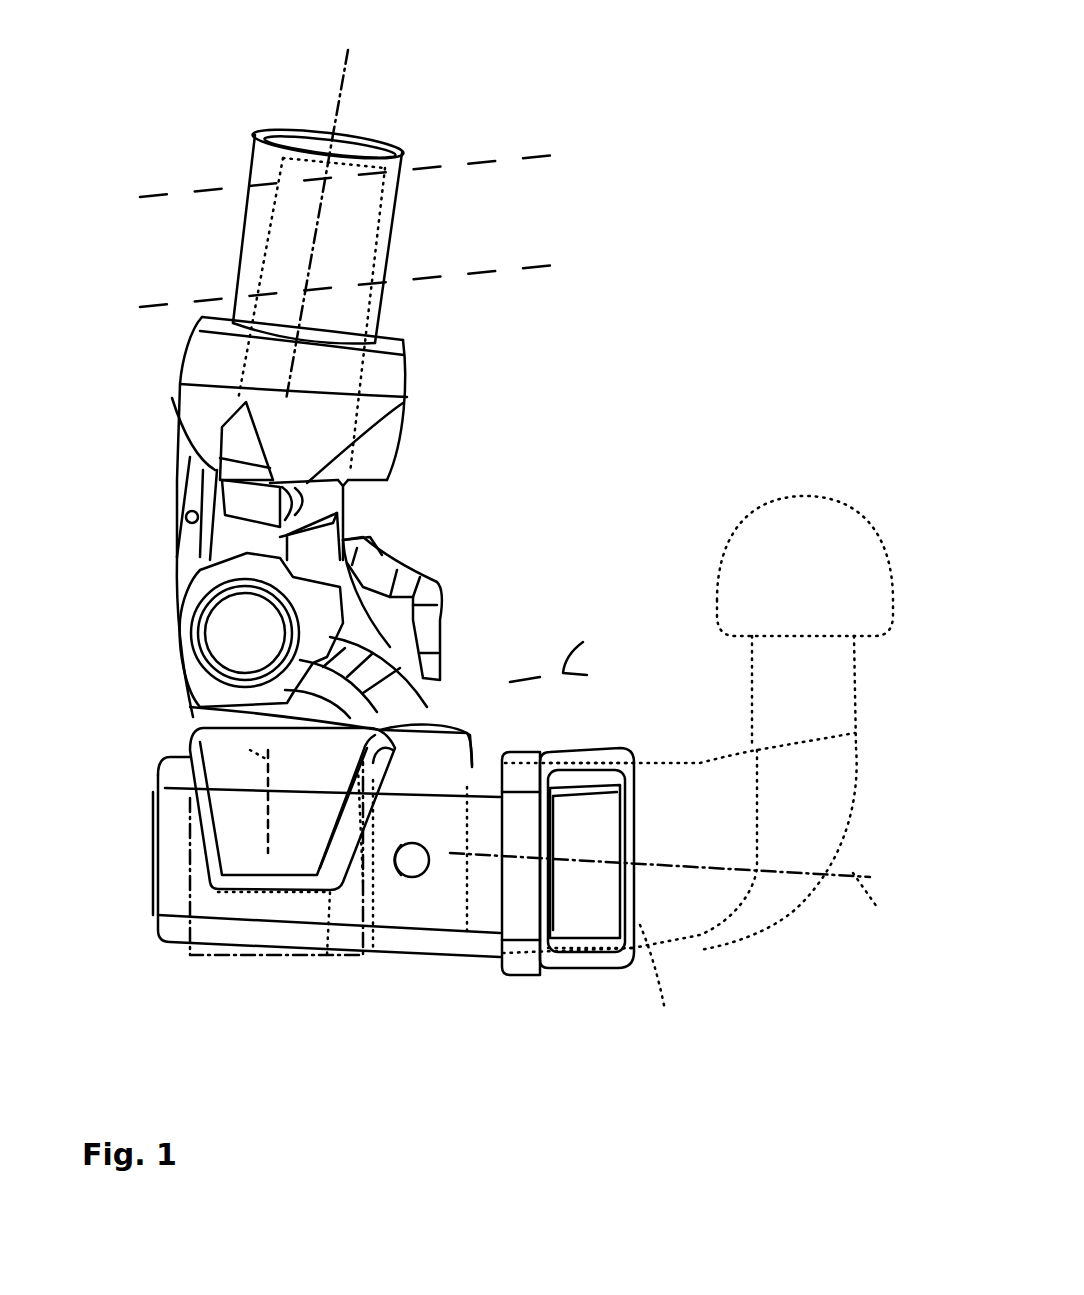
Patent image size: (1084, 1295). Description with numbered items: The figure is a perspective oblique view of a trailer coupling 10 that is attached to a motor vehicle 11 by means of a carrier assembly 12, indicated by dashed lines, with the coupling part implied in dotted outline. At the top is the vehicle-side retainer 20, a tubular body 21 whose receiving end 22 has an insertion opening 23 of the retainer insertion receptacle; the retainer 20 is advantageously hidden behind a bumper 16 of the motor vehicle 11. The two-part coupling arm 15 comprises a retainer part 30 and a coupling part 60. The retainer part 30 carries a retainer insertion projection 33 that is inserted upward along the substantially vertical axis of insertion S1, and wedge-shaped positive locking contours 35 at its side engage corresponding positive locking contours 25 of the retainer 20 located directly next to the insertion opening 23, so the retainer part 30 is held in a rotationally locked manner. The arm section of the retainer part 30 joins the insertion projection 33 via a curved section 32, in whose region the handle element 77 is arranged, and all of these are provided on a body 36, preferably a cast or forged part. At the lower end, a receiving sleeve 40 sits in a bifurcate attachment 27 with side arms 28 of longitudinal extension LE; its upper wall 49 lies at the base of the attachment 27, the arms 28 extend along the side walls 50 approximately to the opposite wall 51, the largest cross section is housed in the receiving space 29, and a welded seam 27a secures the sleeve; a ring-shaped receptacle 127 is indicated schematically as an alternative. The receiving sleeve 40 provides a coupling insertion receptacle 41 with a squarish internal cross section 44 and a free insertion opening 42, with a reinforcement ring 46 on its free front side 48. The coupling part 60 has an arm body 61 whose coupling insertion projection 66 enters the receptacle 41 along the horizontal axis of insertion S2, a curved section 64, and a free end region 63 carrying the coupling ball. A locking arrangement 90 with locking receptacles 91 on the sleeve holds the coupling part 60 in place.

The trailer coupling 10 is at (775, 140).
The motor vehicle 11 is at (200, 190).
The carrier assembly 12 is at (540, 157).
The axis of insertion S1 is at (350, 62).
The axis of insertion S2 is at (682, 895).
The retainer 20 is at (417, 140).
The sleeve wall 21 is at (385, 253).
The retainer insertion projection 33 is at (395, 205).
The receiving end 22 is at (408, 378).
The insertion opening 23 is at (345, 482).
The positive locking contours 25 is at (217, 448).
The positive locking contours 35 is at (227, 433).
The curved section 32 is at (185, 627).
The body 36 is at (183, 612).
The retainer part 30 is at (160, 680).
The handle element 77 is at (440, 585).
The attachment 27 is at (440, 735).
The receiving space 29 is at (430, 775).
The upper wall 49 is at (470, 747).
The bumper 16 is at (567, 647).
The coupling arm 15 is at (705, 745).
The coupling part 60 is at (835, 497).
The free end region 63 is at (850, 673).
The curved section 64 is at (777, 887).
The longitudinal extension LE is at (241, 795).
The coupling insertion receptacle 41 is at (613, 832).
The internal cross section 44 is at (603, 875).
The insertion opening 42 is at (575, 968).
The reinforcement ring 46 is at (523, 972).
The free front side 48 is at (577, 917).
The locking receptacles 91 is at (413, 853).
The locking arrangement 90 is at (416, 892).
The ring-shaped receptacle 127 is at (190, 838).
The side arms 28 is at (222, 865).
The receiving sleeve 40 is at (250, 945).
The side walls 50 is at (320, 903).
The wall 51 is at (397, 950).
The welded seam 27a is at (327, 955).
The coupling insertion projection 66 is at (490, 935).
The arm body 61 is at (671, 985).